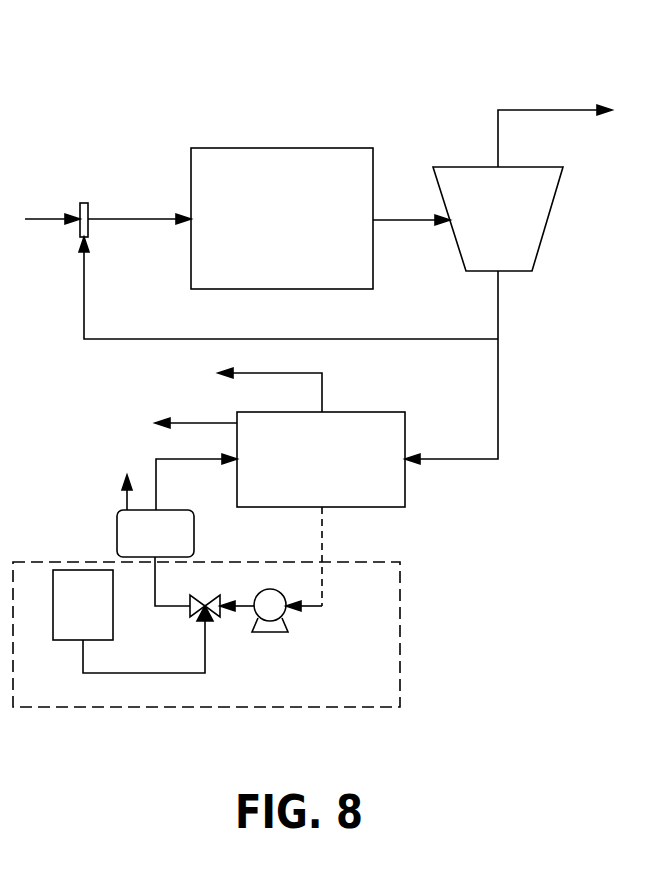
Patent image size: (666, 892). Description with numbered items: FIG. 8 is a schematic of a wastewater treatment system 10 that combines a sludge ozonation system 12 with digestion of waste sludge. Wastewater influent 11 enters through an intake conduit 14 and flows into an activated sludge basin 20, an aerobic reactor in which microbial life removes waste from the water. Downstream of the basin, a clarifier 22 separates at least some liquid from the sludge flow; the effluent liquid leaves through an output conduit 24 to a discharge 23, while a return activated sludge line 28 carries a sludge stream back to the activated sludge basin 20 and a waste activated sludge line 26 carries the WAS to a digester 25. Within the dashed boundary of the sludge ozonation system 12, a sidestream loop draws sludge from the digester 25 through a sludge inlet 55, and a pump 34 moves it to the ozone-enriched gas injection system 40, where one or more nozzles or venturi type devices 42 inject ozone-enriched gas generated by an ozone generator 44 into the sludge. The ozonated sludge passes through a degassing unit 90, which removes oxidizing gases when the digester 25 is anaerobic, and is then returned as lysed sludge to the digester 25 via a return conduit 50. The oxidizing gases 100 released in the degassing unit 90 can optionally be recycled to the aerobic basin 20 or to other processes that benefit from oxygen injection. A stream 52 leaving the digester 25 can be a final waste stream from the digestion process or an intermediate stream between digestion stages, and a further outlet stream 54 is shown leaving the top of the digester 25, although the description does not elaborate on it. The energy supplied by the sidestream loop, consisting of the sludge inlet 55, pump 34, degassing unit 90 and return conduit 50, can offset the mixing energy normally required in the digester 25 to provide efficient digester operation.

The wastewater treatment system 10 is at (116, 59).
The feed stream 11 is at (50, 220).
The intake conduit 14 is at (148, 217).
The activated sludge basin 20 is at (294, 229).
The clarifier 22 is at (510, 226).
The discharge 23 is at (644, 123).
The output conduit 24 is at (553, 108).
The digester 25 is at (330, 466).
The waste activated sludge (WAS) line 26 is at (501, 389).
The return activated sludge (RAS) line 28 is at (365, 338).
The pump 34 is at (273, 610).
The ozone-enriched gas injection system 40 is at (238, 664).
The nozzles or venturi type devices 42 is at (200, 615).
The ozone generator 44 is at (95, 614).
The return conduit 50 is at (183, 461).
The stream 52 is at (195, 422).
The vent line 54 is at (323, 390).
The sludge inlet 55 is at (322, 537).
The degassing unit 90 is at (167, 543).
The oxidizing gases 100 is at (122, 498).
The sludge ozonation system 12 is at (100, 708).